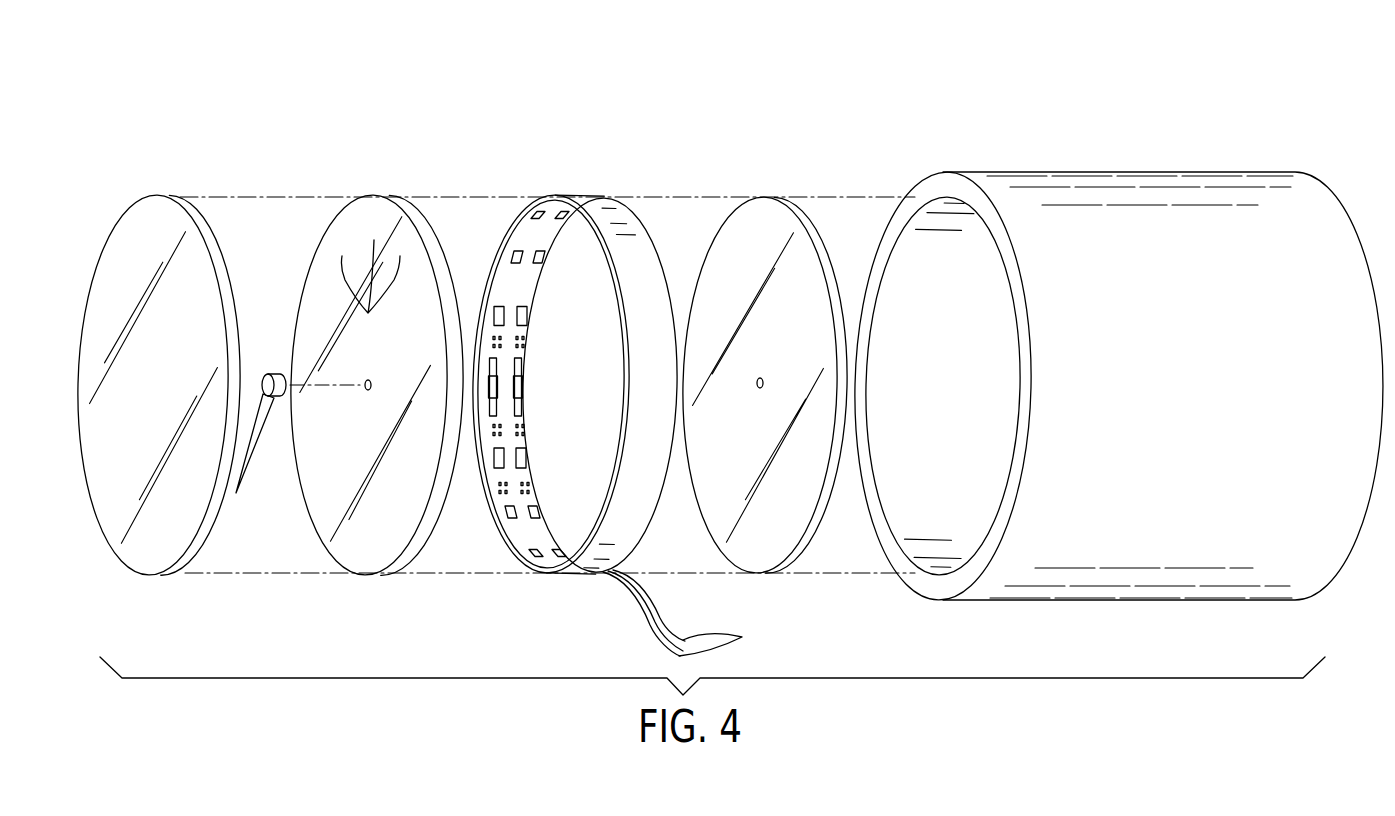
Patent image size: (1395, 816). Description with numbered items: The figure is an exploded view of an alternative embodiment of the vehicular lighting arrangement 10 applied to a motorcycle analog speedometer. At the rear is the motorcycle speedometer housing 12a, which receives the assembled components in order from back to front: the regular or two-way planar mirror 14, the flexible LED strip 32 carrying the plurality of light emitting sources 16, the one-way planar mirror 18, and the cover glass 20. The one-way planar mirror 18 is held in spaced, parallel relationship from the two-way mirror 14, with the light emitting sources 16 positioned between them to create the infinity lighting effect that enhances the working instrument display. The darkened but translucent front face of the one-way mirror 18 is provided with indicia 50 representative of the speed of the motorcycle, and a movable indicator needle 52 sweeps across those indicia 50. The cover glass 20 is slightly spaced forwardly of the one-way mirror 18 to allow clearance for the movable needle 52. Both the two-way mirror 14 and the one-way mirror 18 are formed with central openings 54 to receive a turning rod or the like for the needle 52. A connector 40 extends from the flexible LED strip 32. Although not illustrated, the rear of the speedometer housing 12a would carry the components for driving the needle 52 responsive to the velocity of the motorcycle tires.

The vehicular lighting arrangement 10 is at (755, 112).
The motorcycle speedometer housing 12a is at (1158, 168).
The two-way planar mirror 14 is at (767, 200).
The light emitting sources 16 is at (542, 255).
The one-way planar mirror 18 is at (548, 350).
The cover glass 20 is at (179, 197).
The flexible LED strip 32 is at (577, 360).
The flexible cable connector 40 is at (742, 637).
The indicia 50 is at (370, 289).
The movable indicator needle 52 is at (264, 384).
The central openings 54 is at (368, 392).